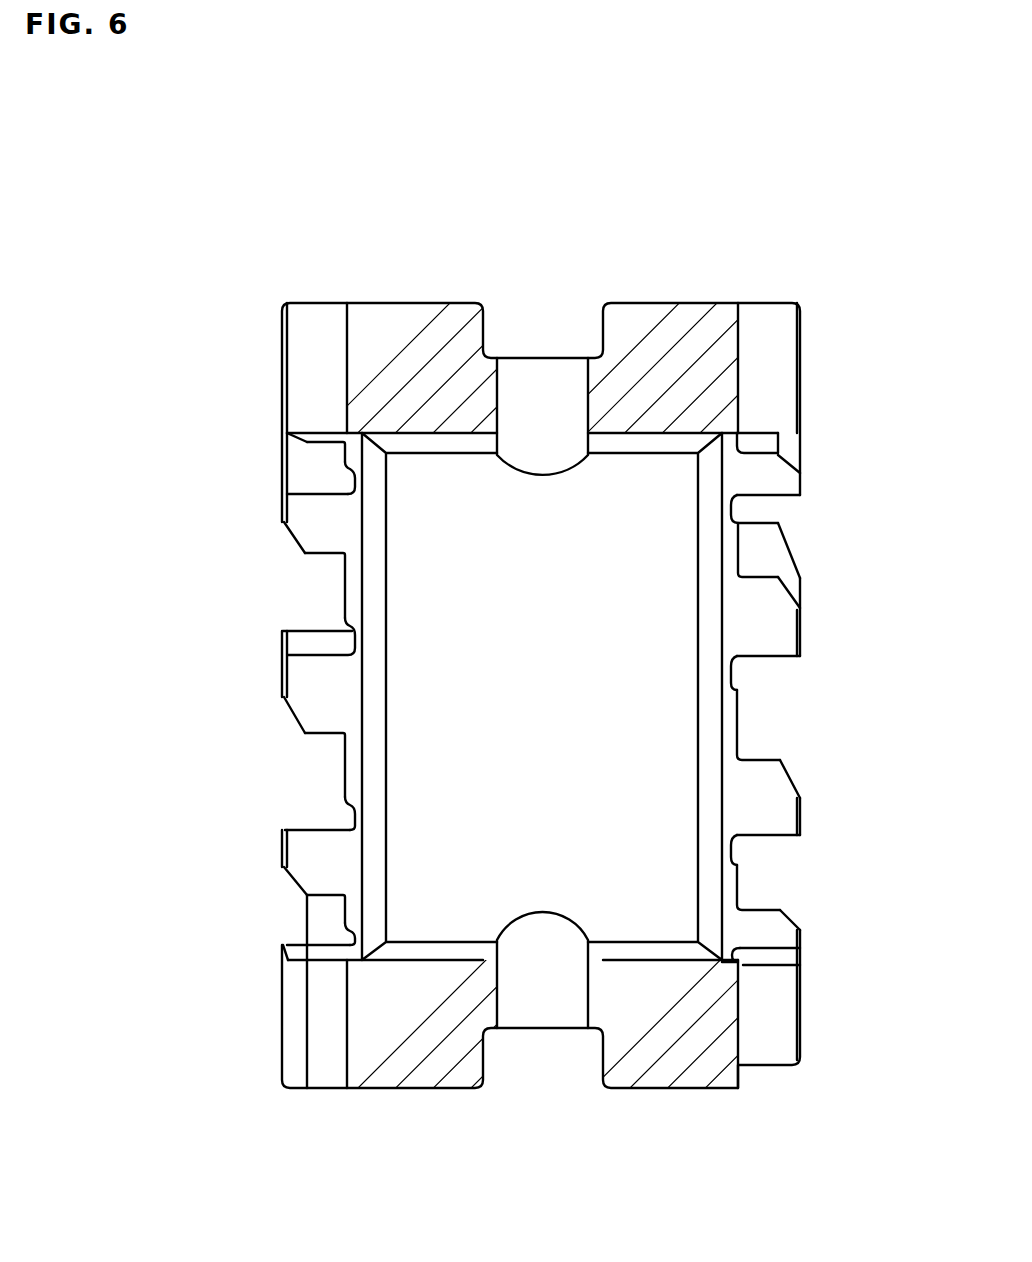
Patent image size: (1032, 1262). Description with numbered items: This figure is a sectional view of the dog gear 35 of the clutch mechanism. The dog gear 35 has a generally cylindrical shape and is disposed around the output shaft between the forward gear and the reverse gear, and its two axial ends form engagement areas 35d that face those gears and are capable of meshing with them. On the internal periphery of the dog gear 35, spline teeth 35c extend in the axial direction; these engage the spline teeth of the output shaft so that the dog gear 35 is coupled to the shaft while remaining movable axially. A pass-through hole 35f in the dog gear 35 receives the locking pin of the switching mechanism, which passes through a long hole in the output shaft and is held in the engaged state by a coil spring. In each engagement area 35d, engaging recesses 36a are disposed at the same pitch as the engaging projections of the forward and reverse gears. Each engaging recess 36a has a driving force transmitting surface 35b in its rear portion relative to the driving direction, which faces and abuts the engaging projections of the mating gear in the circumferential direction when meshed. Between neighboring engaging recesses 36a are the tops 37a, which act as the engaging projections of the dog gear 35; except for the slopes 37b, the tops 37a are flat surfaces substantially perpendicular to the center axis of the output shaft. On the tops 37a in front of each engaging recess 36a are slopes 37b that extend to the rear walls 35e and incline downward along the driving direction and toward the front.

The dog gear 35 is at (694, 266).
The driving force transmitting surface 35b is at (762, 1050).
The spline teeth 35c is at (645, 940).
The engagement area 35d is at (800, 1047).
The rear wall 35e is at (772, 745).
The pass-through hole 35f is at (540, 910).
The engaging recess 36a is at (782, 888).
The top 37a is at (800, 997).
The slope 37b is at (795, 790).